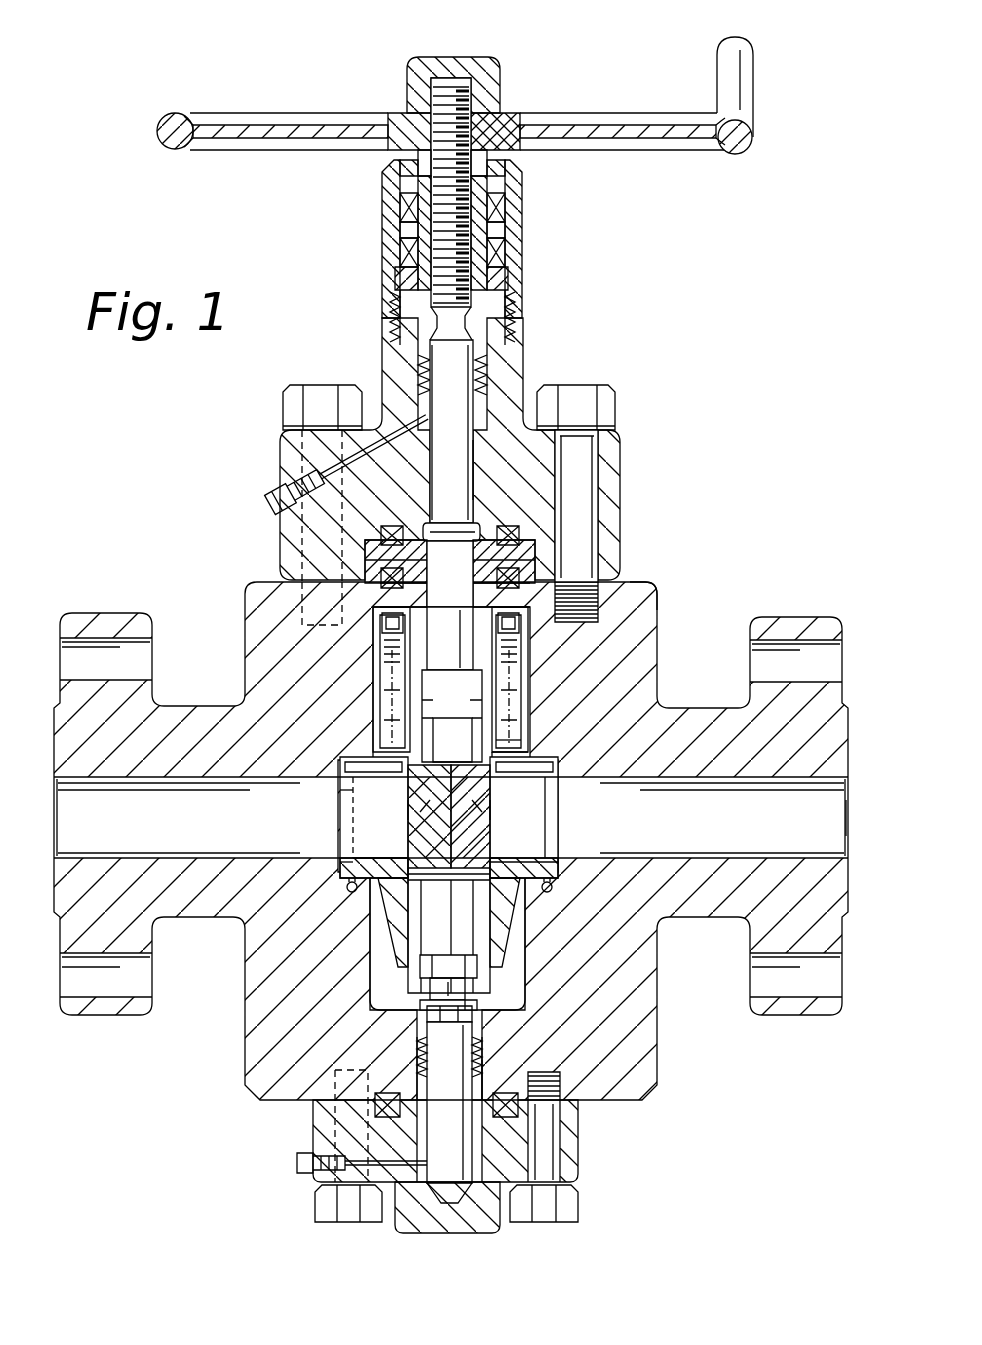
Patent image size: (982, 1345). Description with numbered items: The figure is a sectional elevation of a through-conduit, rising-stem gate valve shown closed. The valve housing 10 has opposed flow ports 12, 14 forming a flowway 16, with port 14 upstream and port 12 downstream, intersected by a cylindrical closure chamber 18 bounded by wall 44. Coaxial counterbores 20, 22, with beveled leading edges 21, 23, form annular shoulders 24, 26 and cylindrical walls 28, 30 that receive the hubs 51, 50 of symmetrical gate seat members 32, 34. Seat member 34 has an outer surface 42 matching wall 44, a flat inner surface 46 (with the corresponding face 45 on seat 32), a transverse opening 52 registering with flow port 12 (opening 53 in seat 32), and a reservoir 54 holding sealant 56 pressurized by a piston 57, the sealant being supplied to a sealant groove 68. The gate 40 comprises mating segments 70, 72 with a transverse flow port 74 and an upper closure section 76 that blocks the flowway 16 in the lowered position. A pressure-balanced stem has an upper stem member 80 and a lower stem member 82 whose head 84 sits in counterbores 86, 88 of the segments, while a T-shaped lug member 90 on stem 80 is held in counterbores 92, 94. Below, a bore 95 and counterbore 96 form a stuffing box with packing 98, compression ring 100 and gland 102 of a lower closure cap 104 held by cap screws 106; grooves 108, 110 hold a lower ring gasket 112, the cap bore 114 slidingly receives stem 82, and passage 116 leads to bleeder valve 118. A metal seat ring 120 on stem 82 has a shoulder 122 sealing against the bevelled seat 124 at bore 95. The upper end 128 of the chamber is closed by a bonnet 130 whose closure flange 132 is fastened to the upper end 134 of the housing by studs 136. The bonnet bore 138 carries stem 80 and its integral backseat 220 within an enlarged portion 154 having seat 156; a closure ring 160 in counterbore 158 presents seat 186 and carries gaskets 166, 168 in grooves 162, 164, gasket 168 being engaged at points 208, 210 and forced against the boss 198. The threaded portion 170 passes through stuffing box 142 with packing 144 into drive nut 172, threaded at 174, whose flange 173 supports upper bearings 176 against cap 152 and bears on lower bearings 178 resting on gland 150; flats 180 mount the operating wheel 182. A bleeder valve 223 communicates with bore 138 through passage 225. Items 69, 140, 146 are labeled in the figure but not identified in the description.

The valve housing 10 is at (660, 602).
The flow port 12 is at (782, 830).
The flow port 14 is at (172, 830).
The flowway 16 is at (818, 843).
The closure chamber 18 is at (522, 708).
The counterbore 20 is at (345, 778).
The leading edge 21 is at (346, 888).
The counterbore 22 is at (555, 772).
The leading edge 23 is at (554, 888).
The annular shoulder 24 is at (345, 858).
The annular shoulder 26 is at (560, 856).
The cylindrical wall 28 is at (368, 862).
The cylindrical wall 30 is at (540, 855).
The gate seat member 32 is at (385, 905).
The gate seat member 34 is at (500, 908).
The gate 40 is at (494, 833).
The outwardly facing surface 42 is at (505, 752).
The wall 44 is at (532, 700).
The inner end face 45 is at (385, 655).
The inner surface 46 is at (482, 632).
The seat hub 50 is at (560, 790).
The seat hub 51 is at (348, 765).
The transverse opening 52 is at (545, 840).
The opening 53 is at (345, 792).
The reservoir 54 is at (502, 652).
The sealant 56 is at (512, 738).
The piston 57 is at (500, 622).
The sealant groove 68 is at (452, 740).
The gate face 69 is at (387, 802).
The gate segment 70 is at (418, 813).
The gate segment 72 is at (487, 794).
The transverse flow port 74 is at (480, 922).
The closure section 76 is at (495, 814).
The upper stem member 80 is at (462, 478).
The lower stem member 82 is at (460, 1088).
The head 84 is at (444, 960).
The counterbore 86 is at (420, 962).
The counterbore 88 is at (480, 962).
The T-shaped lug member 90 is at (455, 675).
The T-shaped counterbore 92 is at (430, 716).
The semi-circular counterbore 94 is at (472, 698).
The bore 95 is at (470, 1015).
The counterbore 96 is at (418, 1046).
The annular packing 98 is at (418, 1064).
The compression ring 100 is at (420, 1085).
The gland 102 is at (425, 1096).
The lower closure cap 104 is at (582, 1122).
The cap screws 106 is at (578, 1202).
The annular groove 108 is at (510, 1100).
The annular groove 110 is at (478, 1113).
The lower ring gasket 112 is at (496, 1098).
The bore 114 is at (452, 1205).
The transverse passage 116 is at (360, 1160).
The bleeder valve 118 is at (297, 1164).
The metal seat ring 120 is at (425, 1005).
The annular shoulder 122 is at (472, 1003).
The bevelled seat 124 is at (430, 1018).
The upper end 128 is at (478, 600).
The bonnet 130 is at (512, 404).
The closure flange 132 is at (605, 512).
The upper end 134 is at (663, 590).
The studs 136 is at (283, 402).
The axial bore 138 is at (449, 432).
The thread 140 is at (418, 375).
The stuffing box 142 is at (512, 352).
The packing 144 is at (488, 385).
The thread 146 is at (392, 330).
The gland 150 is at (500, 286).
The cap 152 is at (522, 226).
The enlarged portion 154 is at (494, 482).
The beveled shoulder 156 is at (478, 442).
The lower counterbore 158 is at (380, 562).
The closure ring 160 is at (362, 575).
The upper ring gasket groove 162 is at (430, 535).
The lower ring gasket groove 164 is at (450, 573).
The upper metal ring gasket 166 is at (372, 548).
The lower metal ring gasket 168 is at (510, 582).
The externally threaded portion 170 is at (432, 215).
The drive nut 172 is at (492, 150).
The annular flange 173 is at (508, 238).
The internal threads 174 is at (465, 78).
The upper antifriction bearings 176 is at (500, 210).
The lower antifriction bearings 178 is at (490, 258).
The flats 180 is at (500, 140).
The operating wheel 182 is at (754, 86).
The beveled conical shoulder 186 is at (440, 520).
The annular boss 198 is at (392, 600).
The point 208 is at (322, 603).
The point 210 is at (500, 583).
The backseat 220 is at (470, 530).
The bleeder valve 223 is at (270, 494).
The passage 225 is at (345, 452).